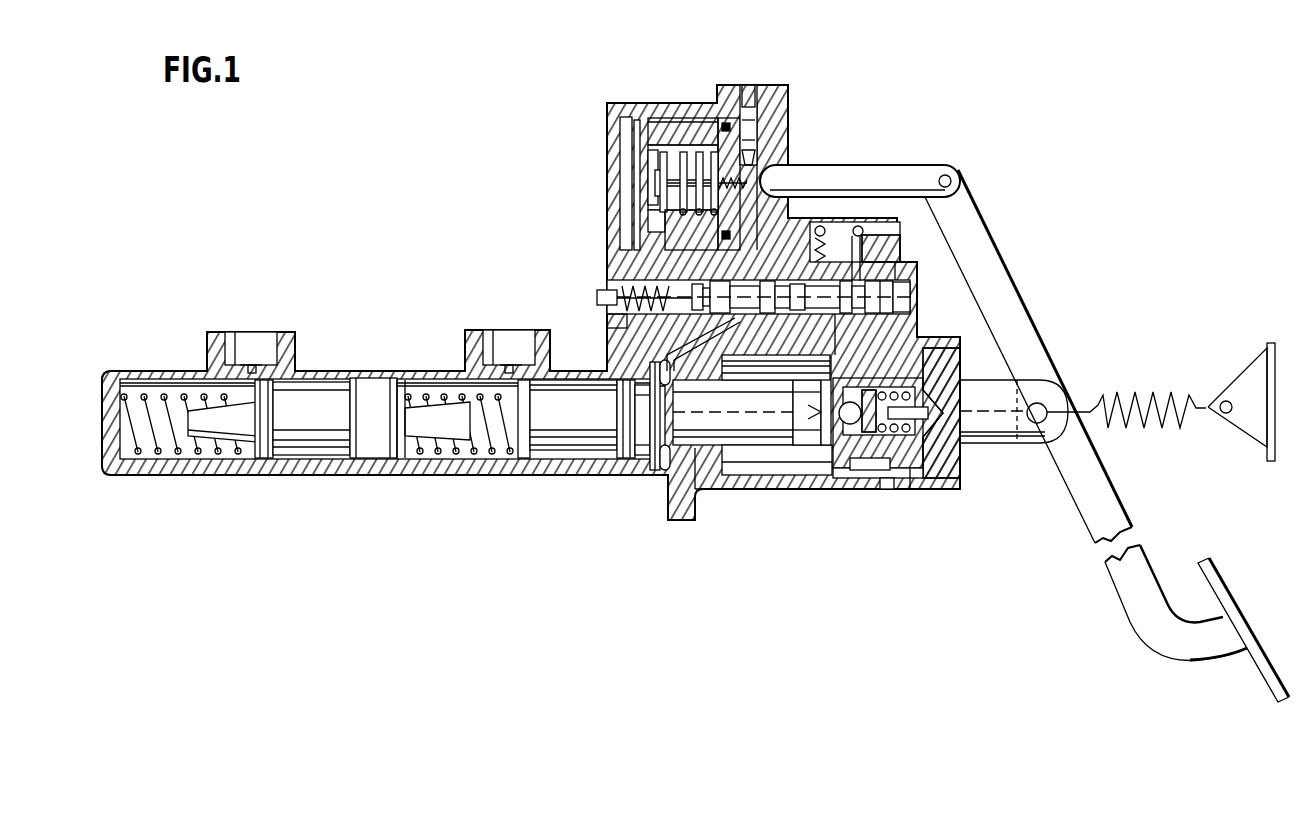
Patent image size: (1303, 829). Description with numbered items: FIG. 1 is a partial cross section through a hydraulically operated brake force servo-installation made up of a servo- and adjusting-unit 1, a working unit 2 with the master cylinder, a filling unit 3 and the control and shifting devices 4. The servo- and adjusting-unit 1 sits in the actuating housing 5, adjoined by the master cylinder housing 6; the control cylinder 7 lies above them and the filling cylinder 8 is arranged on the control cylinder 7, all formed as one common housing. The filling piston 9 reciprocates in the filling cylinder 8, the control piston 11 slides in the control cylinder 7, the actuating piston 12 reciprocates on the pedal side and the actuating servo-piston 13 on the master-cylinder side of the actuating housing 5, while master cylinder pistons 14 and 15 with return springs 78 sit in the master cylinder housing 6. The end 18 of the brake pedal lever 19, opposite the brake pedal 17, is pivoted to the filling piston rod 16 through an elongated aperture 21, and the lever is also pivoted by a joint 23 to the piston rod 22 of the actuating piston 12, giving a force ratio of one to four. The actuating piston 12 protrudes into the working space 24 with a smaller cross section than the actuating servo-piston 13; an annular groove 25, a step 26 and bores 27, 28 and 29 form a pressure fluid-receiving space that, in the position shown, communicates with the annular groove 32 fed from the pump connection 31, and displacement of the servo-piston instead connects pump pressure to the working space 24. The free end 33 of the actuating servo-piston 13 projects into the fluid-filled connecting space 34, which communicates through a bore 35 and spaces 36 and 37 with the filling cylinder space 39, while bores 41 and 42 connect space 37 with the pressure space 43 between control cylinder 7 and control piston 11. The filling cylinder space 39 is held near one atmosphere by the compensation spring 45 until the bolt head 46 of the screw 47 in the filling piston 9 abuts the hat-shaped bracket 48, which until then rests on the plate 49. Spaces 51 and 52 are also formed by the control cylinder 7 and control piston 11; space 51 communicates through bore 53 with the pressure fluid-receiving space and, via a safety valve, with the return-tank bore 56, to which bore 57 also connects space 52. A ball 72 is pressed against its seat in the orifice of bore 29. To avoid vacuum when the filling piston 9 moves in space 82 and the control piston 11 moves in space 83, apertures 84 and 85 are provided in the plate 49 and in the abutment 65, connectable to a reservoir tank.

The servo- and adjusting-unit 1 is at (964, 480).
The working unit 2 is at (388, 490).
The filling unit 3 is at (795, 123).
The control and shifting devices 4 is at (598, 265).
The actuating housing 5 is at (845, 480).
The master cylinder housing 6 is at (488, 465).
The control cylinder 7 is at (915, 318).
The filling cylinder 8 is at (790, 150).
The filling piston 9 is at (705, 135).
The control piston 11 is at (909, 273).
The actuating piston 12 is at (962, 440).
The actuating servo-piston 13 is at (742, 445).
The master cylinder piston 14 is at (575, 455).
The master cylinder piston 15 is at (360, 458).
The filling piston rod 16 is at (845, 170).
The brake pedal 17 is at (1220, 590).
The end of the brake pedal lever 18 is at (965, 218).
The brake pedal lever 19 is at (1040, 365).
The elongated aperture 21 is at (950, 178).
The piston rod 22 is at (1013, 430).
The joint 23 is at (1046, 405).
The working space 24 is at (922, 480).
The annular groove 25 is at (875, 483).
The step 26 is at (722, 478).
The bore 27 is at (830, 475).
The bore 28 is at (800, 398).
The bore 29 is at (840, 414).
The connection for a pressure pump 31 is at (888, 492).
The annular groove 32 is at (910, 485).
The free end of the actuating servo-piston 33 is at (645, 458).
The connecting space 34 is at (668, 470).
The bore 35 is at (700, 352).
The space 36 is at (728, 280).
The space 37 is at (773, 280).
The filling cylinder space 39 is at (760, 125).
The bore 41 is at (790, 316).
The bore 42 is at (825, 316).
The pressure space 43 is at (910, 292).
The compensation spring 45 is at (690, 125).
The bolt head 46 is at (648, 175).
The screw 47 is at (740, 135).
The hat-shaped bracket 48 is at (690, 212).
The plate 49 is at (620, 150).
The space 51 is at (838, 318).
The space 52 is at (858, 312).
The bore 53 is at (830, 368).
The bore 56 is at (896, 250).
The bore 57 is at (838, 262).
The abutment 65 is at (610, 316).
The ball 72 is at (840, 445).
The return springs 78 is at (215, 455).
The space 82 is at (648, 226).
The space 83 is at (670, 284).
The aperture 84 is at (655, 185).
The aperture 85 is at (600, 297).